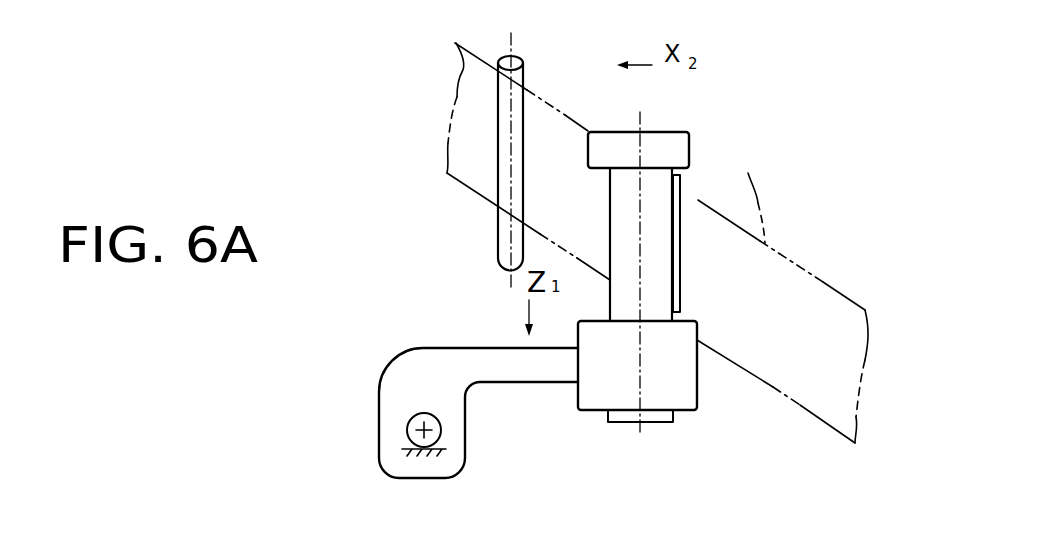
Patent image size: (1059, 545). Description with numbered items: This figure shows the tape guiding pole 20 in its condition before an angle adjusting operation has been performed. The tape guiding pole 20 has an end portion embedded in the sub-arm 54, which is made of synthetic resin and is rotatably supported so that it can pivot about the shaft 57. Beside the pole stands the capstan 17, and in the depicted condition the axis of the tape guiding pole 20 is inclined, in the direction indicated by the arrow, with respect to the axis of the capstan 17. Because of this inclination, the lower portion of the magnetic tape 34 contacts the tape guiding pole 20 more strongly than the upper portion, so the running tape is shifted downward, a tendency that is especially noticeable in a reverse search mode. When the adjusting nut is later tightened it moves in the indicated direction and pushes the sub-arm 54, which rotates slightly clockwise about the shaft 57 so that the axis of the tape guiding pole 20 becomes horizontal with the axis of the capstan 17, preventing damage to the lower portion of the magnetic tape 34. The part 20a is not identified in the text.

The capstan 17 is at (524, 73).
The tape guiding pole 20 is at (686, 133).
The magnetic tape 34 is at (681, 197).
The nut block 20a is at (697, 322).
The sub-arm 54 is at (535, 372).
The shaft 57 is at (409, 432).